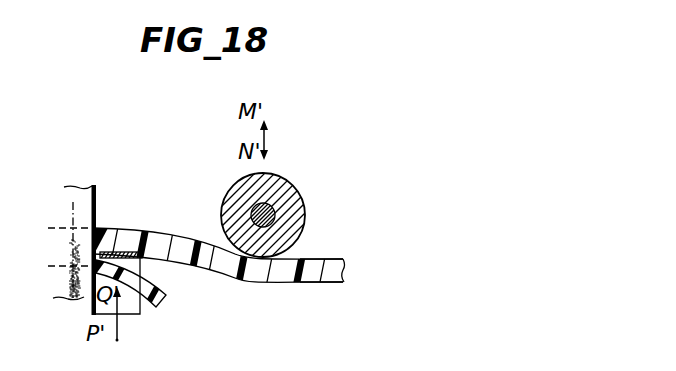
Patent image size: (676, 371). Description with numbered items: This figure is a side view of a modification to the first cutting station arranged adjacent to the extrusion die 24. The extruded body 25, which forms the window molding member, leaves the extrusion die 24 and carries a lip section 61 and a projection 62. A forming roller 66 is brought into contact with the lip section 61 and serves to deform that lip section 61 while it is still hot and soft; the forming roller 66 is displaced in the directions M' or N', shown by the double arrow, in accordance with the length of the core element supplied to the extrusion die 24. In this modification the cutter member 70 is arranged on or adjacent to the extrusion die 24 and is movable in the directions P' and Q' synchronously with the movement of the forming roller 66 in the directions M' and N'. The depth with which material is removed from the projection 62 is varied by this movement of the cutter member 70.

The extrusion die 24 is at (77, 187).
The extruded body 25 is at (137, 228).
The lip section 61 is at (330, 259).
The forming roller 66 is at (292, 197).
The cutter member 70 is at (143, 260).
The projection 62 is at (162, 301).